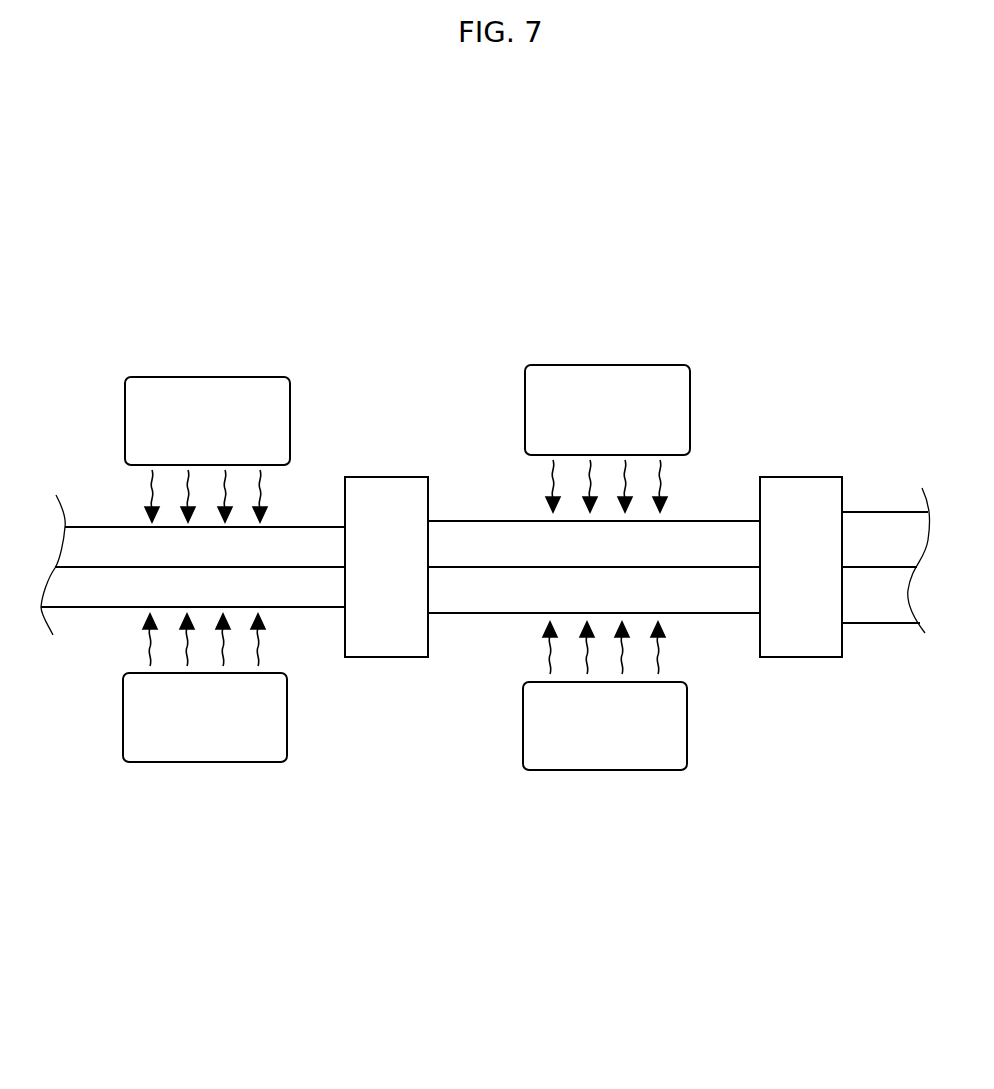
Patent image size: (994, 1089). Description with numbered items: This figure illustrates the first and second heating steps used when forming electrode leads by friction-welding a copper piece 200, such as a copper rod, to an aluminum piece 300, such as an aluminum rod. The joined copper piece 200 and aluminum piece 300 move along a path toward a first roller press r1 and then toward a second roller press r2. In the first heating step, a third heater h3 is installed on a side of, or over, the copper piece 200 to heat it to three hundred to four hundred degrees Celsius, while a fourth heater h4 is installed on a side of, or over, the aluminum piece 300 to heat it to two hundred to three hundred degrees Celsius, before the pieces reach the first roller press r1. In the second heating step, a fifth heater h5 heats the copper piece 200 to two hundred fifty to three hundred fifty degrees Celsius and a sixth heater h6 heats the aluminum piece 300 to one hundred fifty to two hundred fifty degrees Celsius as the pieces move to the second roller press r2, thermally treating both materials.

The third heater h3 is at (215, 392).
The fourth heater h4 is at (163, 748).
The fifth heater h5 is at (620, 382).
The sixth heater h6 is at (590, 752).
The first roller press r1 is at (403, 643).
The second roller press r2 is at (797, 638).
The copper piece 200 is at (316, 530).
The aluminum piece 300 is at (307, 597).